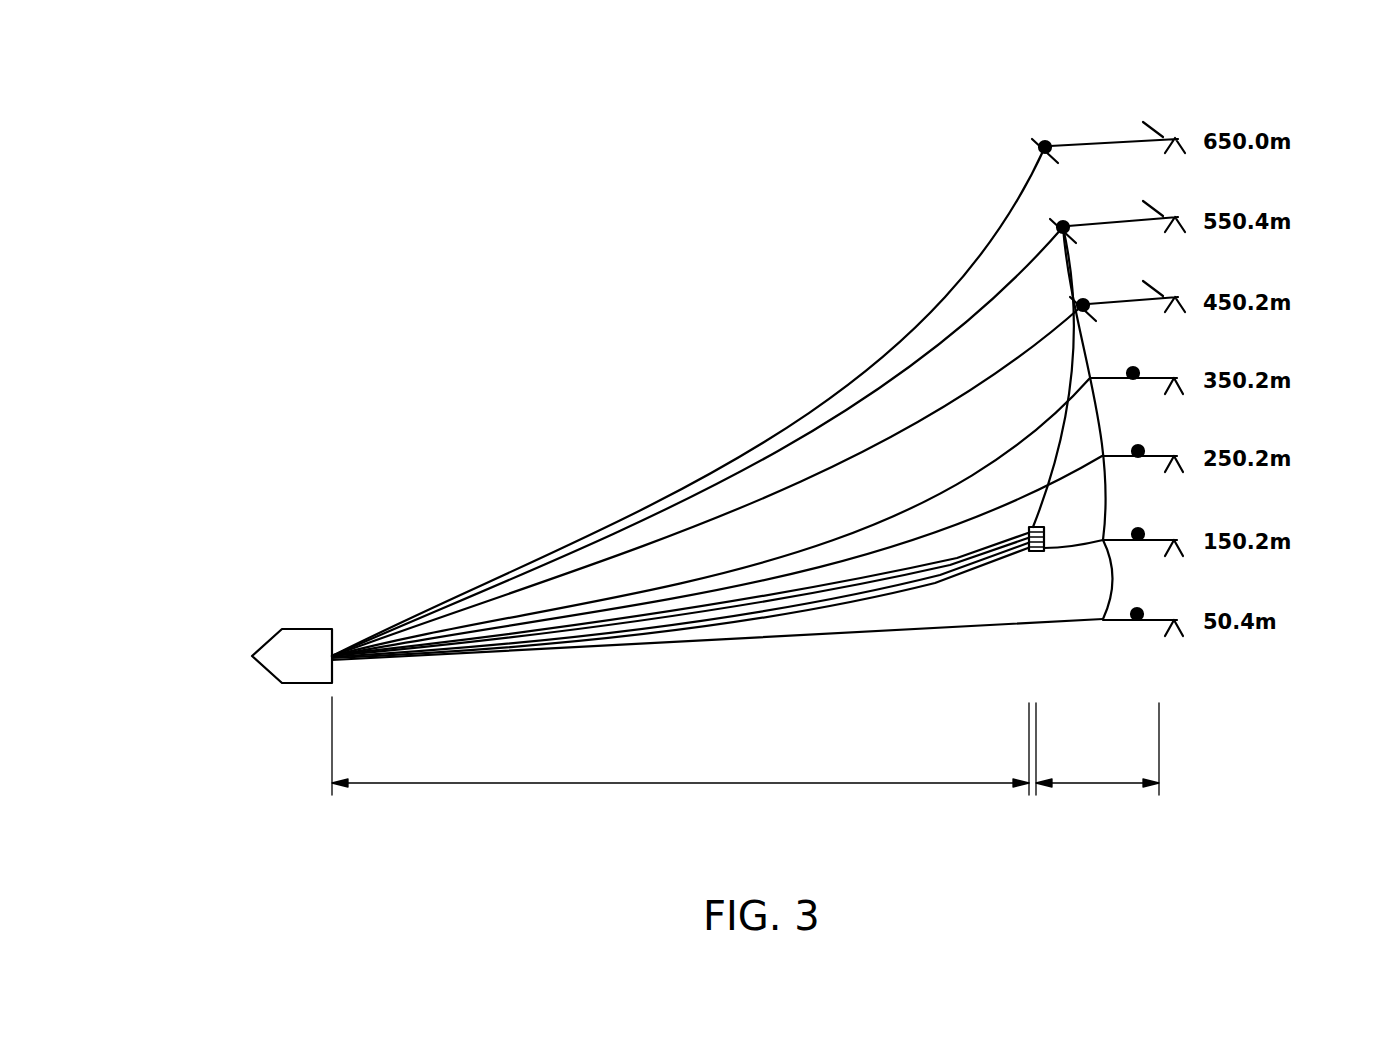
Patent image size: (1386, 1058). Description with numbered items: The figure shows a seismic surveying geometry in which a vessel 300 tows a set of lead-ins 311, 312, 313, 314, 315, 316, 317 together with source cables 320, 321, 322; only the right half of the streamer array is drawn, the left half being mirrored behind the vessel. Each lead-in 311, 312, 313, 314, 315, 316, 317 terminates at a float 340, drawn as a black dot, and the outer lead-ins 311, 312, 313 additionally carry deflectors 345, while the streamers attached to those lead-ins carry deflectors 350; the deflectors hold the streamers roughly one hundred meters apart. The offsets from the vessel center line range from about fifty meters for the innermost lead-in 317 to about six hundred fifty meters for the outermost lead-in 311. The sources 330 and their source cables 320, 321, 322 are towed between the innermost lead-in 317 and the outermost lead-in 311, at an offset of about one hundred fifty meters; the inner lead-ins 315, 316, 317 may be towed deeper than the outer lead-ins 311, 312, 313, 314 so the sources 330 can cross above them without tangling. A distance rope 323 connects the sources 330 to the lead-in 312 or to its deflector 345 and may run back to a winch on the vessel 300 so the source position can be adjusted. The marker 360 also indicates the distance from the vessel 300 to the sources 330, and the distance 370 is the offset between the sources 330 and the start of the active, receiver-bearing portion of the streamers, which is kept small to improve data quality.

The vessel 300 is at (302, 629).
The lead-in 311 is at (1022, 192).
The lead-in 312 is at (998, 293).
The lead-in 313 is at (975, 387).
The lead-in 314 is at (883, 518).
The lead-in 315 is at (833, 560).
The lead-in 316 is at (1065, 549).
The lead-in 317 is at (697, 642).
The source cable 320 is at (957, 558).
The source cable 321 is at (807, 610).
The source cable 322 is at (830, 610).
The distance rope 323 is at (1067, 275).
The source 330 is at (1029, 552).
The float 340 is at (1138, 620).
The deflector 345 is at (1060, 150).
The deflector 350 is at (1160, 125).
The marker / distance 360 is at (1182, 393).
The distance 370 is at (1107, 783).